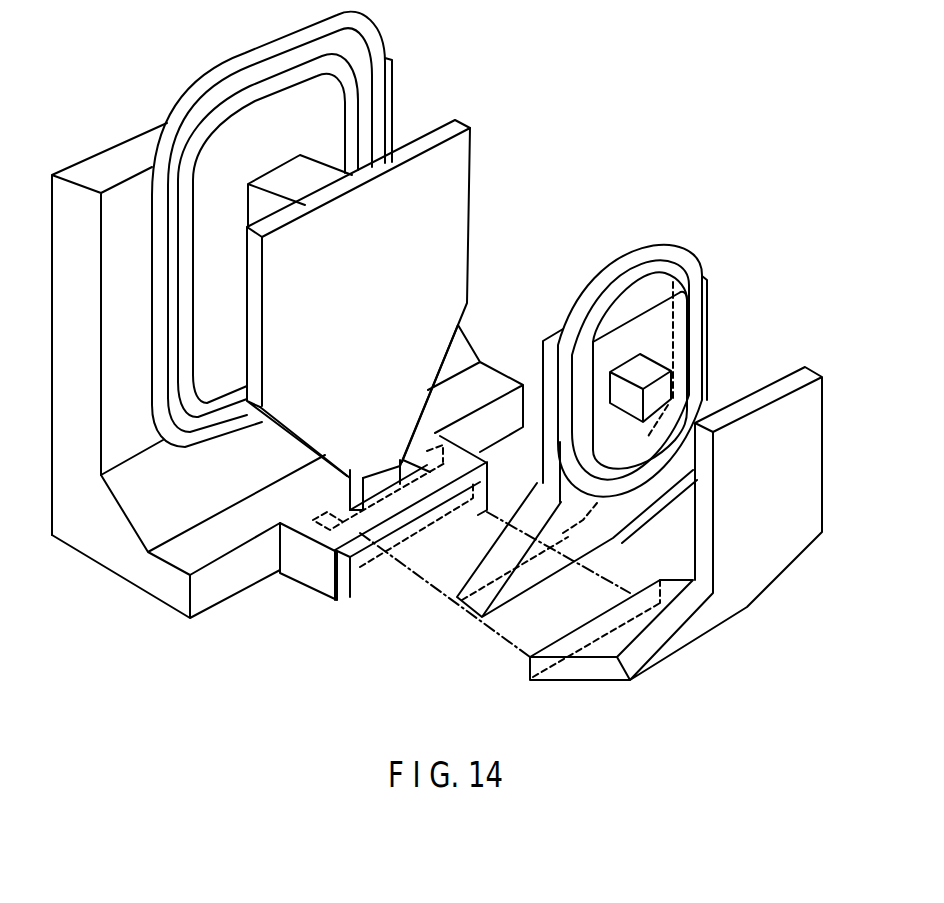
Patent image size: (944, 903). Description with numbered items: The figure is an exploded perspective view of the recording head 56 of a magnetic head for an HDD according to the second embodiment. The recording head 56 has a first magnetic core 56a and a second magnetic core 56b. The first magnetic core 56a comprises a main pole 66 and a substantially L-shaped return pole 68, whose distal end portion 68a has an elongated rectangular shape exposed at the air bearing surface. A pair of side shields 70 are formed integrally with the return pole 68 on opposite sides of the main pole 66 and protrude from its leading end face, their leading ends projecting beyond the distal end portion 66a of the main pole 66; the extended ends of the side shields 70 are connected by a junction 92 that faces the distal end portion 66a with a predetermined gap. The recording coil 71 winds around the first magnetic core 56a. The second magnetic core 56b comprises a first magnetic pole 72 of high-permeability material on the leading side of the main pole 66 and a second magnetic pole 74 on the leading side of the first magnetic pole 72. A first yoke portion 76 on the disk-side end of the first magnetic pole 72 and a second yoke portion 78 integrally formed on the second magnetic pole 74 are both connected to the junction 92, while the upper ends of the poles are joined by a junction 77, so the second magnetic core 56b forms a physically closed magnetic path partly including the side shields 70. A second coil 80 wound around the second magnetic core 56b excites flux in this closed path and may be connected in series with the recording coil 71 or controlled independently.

The recording head 56 is at (644, 186).
The first magnetic core 56a is at (500, 114).
The second magnetic core 56b is at (759, 314).
The main pole 66 is at (460, 208).
The distal end portion 66a is at (347, 491).
The return pole 68 is at (105, 170).
The distal end portion 68a is at (140, 575).
The side shields 70 is at (305, 572).
The recording coil 71 is at (217, 78).
The first magnetic pole 72 is at (560, 332).
The second magnetic pole 74 is at (756, 398).
The first yoke portion 76 is at (530, 574).
The junction 77 is at (652, 373).
The second yoke portion 78 is at (607, 645).
The second coil 80 is at (690, 262).
The junction 92 is at (350, 583).